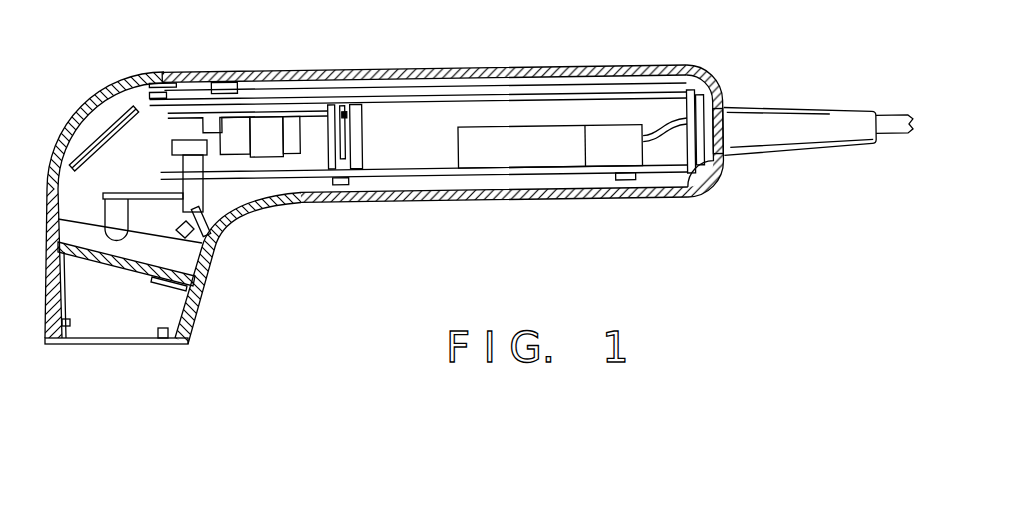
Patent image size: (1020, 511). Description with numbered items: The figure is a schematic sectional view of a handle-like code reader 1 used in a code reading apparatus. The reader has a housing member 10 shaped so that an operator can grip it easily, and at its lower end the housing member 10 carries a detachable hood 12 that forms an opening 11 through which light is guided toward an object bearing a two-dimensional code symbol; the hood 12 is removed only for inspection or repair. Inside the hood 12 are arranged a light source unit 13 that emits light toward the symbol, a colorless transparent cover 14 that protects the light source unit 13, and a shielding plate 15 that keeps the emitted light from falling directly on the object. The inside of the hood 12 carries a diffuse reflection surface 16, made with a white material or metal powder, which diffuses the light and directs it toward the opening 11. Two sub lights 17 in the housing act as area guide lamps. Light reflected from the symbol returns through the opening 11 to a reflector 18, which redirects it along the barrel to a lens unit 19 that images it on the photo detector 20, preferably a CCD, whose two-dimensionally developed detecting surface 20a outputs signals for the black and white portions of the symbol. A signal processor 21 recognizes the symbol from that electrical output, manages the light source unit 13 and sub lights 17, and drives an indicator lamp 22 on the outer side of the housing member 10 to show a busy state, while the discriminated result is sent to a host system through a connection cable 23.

The code reader 1 is at (662, 52).
The housing member 10 is at (463, 72).
The opening 11 is at (112, 346).
The hood 12 is at (194, 325).
The light source unit 13 is at (200, 222).
The transparent cover 14 is at (123, 268).
The shielding plate 15 is at (158, 291).
The diffuse reflection surface 16 is at (65, 322).
The sub lights 17 is at (107, 210).
The reflector 18 is at (107, 138).
The lens unit 19 is at (267, 126).
The photo detector 20 is at (343, 104).
The detecting surface 20a is at (338, 151).
The signal processor 21 is at (414, 170).
The indicator lamp 22 is at (155, 69).
The connection cable 23 is at (888, 124).